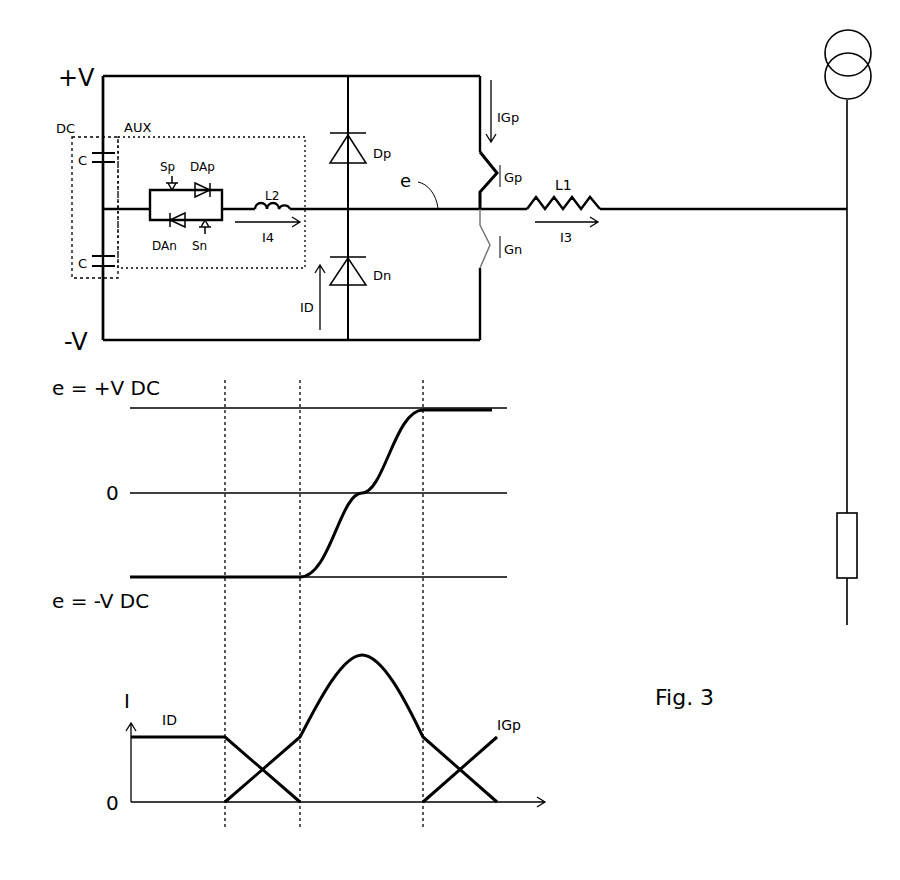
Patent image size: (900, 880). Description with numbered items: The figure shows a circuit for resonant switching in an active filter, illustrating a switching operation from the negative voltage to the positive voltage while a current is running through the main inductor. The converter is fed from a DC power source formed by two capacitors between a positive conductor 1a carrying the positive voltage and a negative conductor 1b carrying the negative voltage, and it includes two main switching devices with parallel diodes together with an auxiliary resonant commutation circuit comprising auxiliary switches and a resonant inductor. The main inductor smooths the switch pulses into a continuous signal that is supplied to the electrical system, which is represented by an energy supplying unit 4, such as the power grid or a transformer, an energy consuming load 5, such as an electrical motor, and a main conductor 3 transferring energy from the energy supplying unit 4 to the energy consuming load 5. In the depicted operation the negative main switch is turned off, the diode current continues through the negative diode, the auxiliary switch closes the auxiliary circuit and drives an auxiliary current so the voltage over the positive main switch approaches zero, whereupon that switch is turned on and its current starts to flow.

The positive conductor 1a is at (186, 76).
The negative conductor 1b is at (168, 342).
The main conductor 3 is at (847, 274).
The energy supplying unit 4 is at (826, 60).
The energy consuming load 5 is at (838, 526).